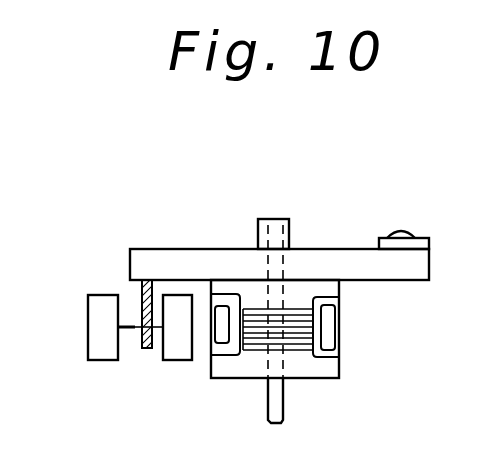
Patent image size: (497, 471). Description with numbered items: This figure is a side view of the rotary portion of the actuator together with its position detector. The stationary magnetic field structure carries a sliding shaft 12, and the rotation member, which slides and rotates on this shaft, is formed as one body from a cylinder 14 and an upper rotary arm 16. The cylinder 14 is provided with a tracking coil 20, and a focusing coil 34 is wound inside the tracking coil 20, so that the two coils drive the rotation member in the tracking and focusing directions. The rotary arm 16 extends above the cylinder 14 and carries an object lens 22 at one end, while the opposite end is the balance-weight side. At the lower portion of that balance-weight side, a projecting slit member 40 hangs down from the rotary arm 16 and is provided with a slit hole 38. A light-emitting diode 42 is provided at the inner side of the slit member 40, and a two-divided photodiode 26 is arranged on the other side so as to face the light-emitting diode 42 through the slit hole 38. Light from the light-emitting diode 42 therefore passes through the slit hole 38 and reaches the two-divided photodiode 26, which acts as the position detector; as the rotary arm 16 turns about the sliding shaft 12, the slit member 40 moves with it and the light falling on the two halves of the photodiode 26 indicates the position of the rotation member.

The sliding shaft 12 is at (277, 400).
The cylinder 14 is at (325, 365).
The upper rotary arm 16 is at (205, 257).
The tracking coil 20 is at (335, 305).
The object lens 22 is at (402, 232).
The two-divided photodiode 26 is at (88, 312).
The focusing coil 34 is at (252, 355).
The slit hole 38 is at (142, 332).
The projecting slit member 40 is at (143, 310).
The light-emitting diode 42 is at (180, 350).